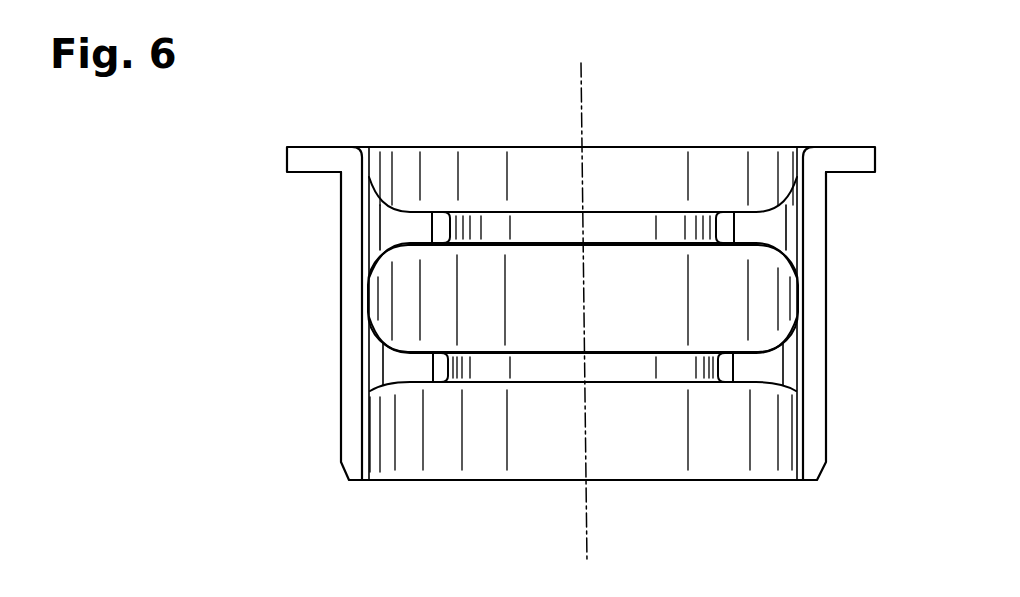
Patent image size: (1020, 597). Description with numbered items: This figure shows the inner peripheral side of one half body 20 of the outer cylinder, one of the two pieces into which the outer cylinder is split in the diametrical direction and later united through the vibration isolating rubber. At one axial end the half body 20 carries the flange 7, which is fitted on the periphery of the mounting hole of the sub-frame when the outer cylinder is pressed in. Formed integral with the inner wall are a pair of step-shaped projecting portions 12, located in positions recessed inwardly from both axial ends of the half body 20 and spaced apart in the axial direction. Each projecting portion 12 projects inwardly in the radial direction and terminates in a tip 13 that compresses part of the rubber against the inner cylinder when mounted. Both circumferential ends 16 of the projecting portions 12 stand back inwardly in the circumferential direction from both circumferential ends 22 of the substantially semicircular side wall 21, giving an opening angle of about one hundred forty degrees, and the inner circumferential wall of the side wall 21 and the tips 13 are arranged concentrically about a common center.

The flange 7 is at (301, 148).
The half body 20 is at (467, 105).
The projecting portion 12 is at (633, 212).
The tip 13 is at (697, 230).
The circumferential end 16 is at (447, 229).
The side wall 21 is at (342, 267).
The circumferential end 22 is at (352, 325).